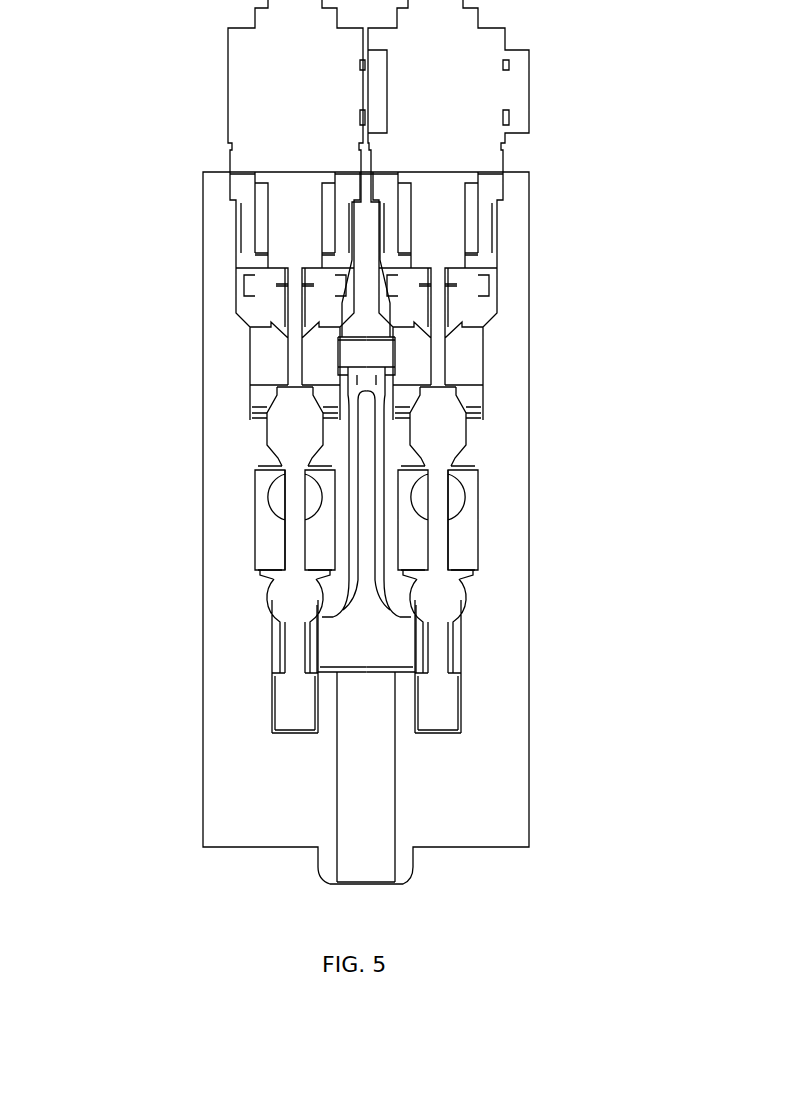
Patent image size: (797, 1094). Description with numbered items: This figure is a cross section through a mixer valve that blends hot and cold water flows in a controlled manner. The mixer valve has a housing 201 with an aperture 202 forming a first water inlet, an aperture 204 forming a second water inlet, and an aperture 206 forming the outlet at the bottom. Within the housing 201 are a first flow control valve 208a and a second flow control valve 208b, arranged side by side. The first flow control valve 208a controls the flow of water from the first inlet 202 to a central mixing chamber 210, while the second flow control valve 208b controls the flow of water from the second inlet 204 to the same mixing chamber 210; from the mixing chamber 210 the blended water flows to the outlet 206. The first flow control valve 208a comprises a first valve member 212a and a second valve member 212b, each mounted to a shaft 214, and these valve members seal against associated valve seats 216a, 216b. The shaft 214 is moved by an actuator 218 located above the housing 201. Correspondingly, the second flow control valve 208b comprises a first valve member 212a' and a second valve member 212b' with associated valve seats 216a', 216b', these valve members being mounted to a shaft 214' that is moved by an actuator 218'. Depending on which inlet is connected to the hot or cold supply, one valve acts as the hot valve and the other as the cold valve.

The housing 201 is at (203, 200).
The actuator 218 is at (296, 168).
The actuator 218' is at (448, 168).
The first flow control valve 208a is at (271, 345).
The second flow control valve 208b is at (473, 353).
The valve seat 216a is at (185, 376).
The valve seat 216a' is at (519, 403).
The first valve member 212a is at (182, 426).
The first valve member 212a' is at (536, 429).
The aperture 202 is at (270, 492).
The aperture 204 is at (466, 503).
The shaft 214 is at (188, 518).
The shaft 214' is at (515, 521).
The valve seat 216b is at (182, 581).
The valve seat 216b' is at (562, 587).
The second valve member 212b is at (194, 656).
The second valve member 212b' is at (540, 656).
The mixing chamber 210 is at (383, 657).
The aperture 206 is at (388, 837).